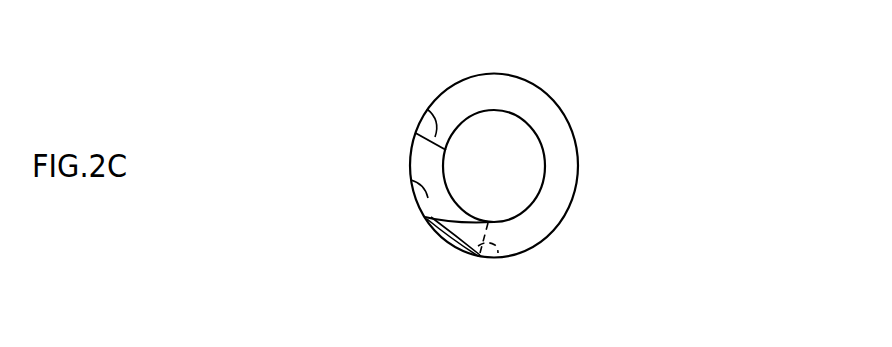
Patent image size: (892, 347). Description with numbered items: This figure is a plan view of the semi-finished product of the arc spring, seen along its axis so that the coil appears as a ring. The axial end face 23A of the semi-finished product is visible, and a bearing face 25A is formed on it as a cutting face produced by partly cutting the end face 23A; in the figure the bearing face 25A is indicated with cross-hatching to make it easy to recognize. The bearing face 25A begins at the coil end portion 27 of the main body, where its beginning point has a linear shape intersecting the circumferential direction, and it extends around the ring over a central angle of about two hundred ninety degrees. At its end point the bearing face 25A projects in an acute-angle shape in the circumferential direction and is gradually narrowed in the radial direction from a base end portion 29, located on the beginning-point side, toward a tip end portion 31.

The bearing face 25A is at (535, 110).
The end face 23A is at (411, 180).
The coil end portion 27 is at (427, 109).
The tip end portion 31 is at (425, 218).
The base end portion 29 is at (498, 253).